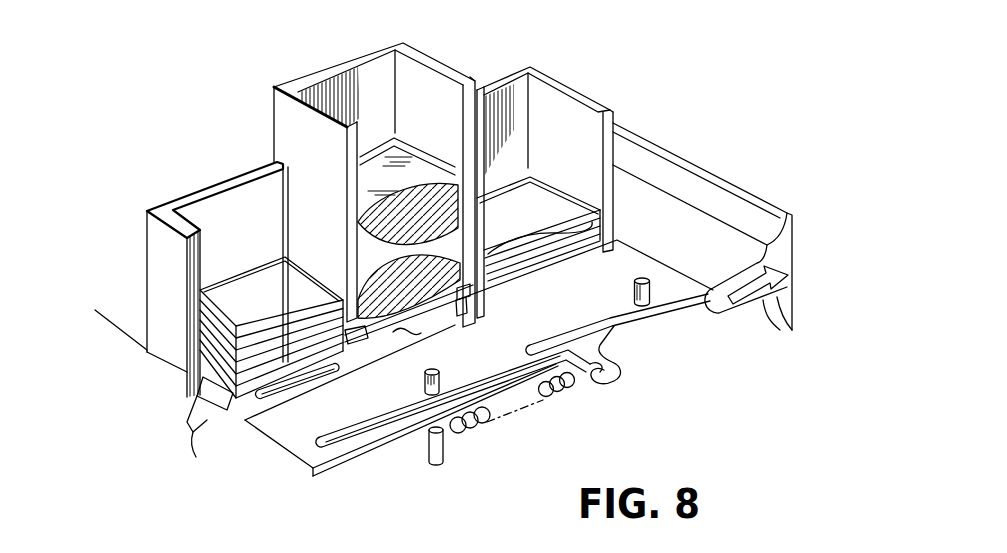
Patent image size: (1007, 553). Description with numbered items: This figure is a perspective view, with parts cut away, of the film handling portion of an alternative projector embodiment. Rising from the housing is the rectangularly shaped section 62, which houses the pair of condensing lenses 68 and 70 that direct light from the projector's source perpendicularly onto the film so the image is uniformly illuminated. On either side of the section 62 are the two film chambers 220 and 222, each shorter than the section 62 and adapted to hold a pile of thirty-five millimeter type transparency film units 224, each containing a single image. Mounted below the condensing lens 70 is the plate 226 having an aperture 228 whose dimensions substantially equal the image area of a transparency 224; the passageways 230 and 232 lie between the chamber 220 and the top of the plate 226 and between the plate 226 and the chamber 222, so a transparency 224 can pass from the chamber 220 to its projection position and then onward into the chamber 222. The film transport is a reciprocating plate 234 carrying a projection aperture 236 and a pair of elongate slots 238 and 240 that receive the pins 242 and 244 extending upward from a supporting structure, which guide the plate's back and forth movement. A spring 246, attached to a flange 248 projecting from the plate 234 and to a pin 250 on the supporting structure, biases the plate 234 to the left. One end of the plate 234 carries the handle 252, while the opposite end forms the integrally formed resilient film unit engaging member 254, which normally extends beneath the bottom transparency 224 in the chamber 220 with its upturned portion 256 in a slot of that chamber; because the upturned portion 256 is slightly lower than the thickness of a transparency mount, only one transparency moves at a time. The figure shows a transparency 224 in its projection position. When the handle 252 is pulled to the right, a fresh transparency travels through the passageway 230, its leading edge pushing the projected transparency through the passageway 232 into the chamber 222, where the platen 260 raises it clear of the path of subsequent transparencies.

The rectangularly shaped section 62 is at (331, 57).
The condensing lens 68 is at (477, 163).
The condensing lens 70 is at (484, 252).
The film chamber 220 is at (157, 258).
The film chamber 222 is at (613, 117).
The transparency film unit 224 is at (207, 340).
The plate 226 is at (470, 296).
The aperture 228 is at (462, 312).
The passageway 230 is at (362, 340).
The passageway 232 is at (484, 287).
The plate 234 is at (392, 389).
The projection aperture 236 is at (427, 338).
The elongate slot 238 is at (348, 428).
The elongate slot 240 is at (617, 326).
The pin 242 is at (439, 370).
The pin 244 is at (644, 283).
The spring 246 is at (553, 399).
The flange 248 is at (620, 378).
The pin 250 is at (444, 448).
The handle 252 is at (702, 175).
The resilient film unit engaging member 254 is at (268, 387).
The upturned portion 256 is at (186, 400).
The platen 260 is at (617, 240).